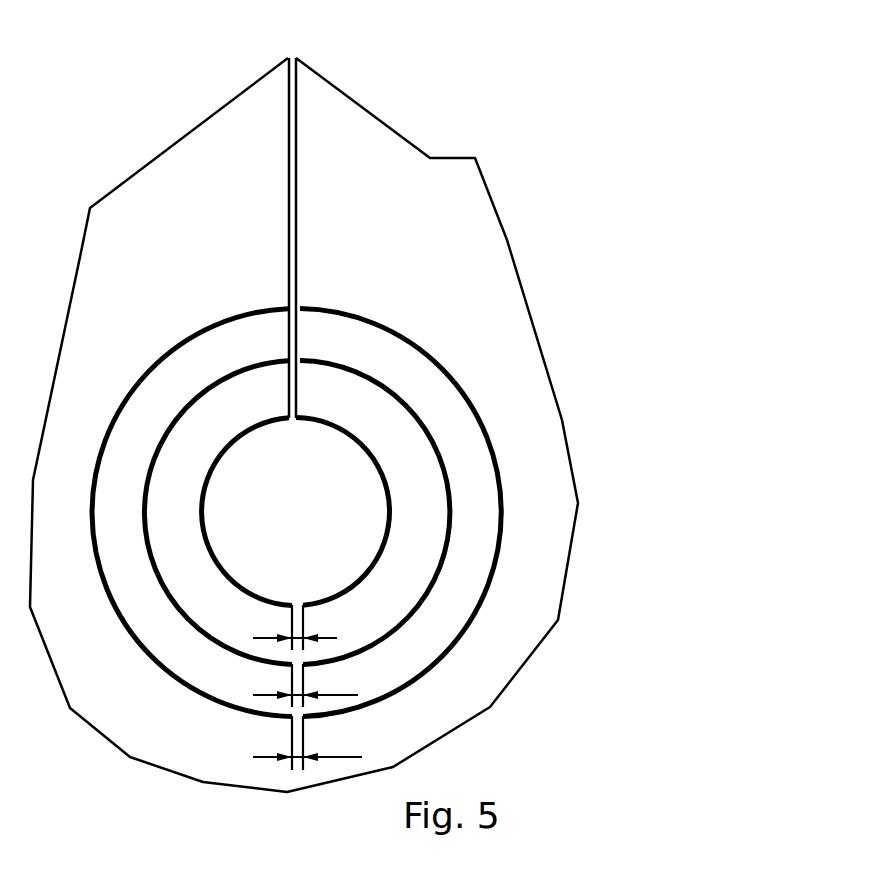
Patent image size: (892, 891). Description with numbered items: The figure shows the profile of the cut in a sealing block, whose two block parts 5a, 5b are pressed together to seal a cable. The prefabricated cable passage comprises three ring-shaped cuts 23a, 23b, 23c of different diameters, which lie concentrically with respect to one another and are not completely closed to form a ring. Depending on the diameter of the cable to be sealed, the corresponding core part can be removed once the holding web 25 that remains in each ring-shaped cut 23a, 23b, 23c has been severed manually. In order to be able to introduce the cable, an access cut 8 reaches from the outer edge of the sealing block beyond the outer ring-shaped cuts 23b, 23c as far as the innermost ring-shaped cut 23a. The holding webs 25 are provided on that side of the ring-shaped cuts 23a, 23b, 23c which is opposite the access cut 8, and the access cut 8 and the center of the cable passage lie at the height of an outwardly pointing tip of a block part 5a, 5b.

The block part 5a is at (304, 425).
The block part 5b is at (304, 425).
The access cut 8 is at (297, 198).
The innermost ring-shaped cut 23a is at (392, 515).
The ring-shaped cut 23b is at (443, 563).
The outer ring-shaped cut 23c is at (465, 628).
The holding web 25 is at (253, 757).